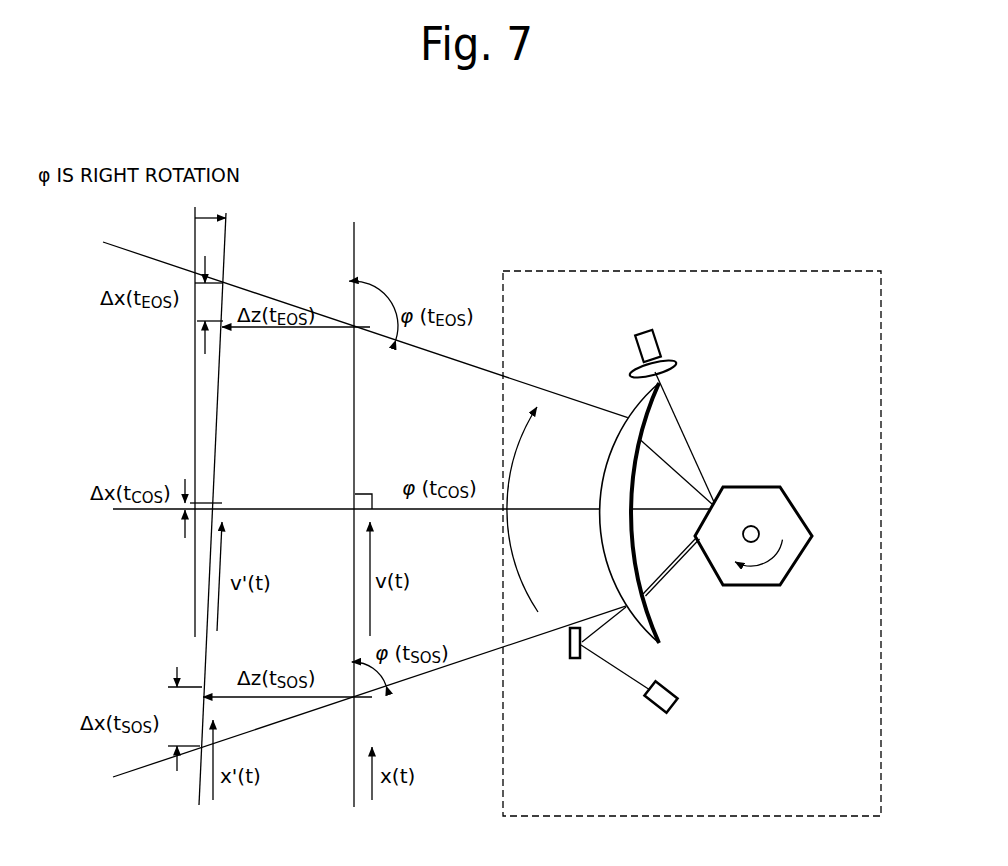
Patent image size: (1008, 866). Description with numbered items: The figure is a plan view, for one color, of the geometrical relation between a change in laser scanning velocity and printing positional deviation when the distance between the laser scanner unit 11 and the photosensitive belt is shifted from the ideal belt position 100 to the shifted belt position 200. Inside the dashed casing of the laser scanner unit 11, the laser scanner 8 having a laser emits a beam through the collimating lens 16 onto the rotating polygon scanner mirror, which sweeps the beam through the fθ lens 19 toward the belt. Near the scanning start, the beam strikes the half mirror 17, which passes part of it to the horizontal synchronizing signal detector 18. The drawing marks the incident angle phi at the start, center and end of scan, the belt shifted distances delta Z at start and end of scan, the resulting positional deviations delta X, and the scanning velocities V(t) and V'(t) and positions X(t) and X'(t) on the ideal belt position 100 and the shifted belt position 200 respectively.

The shifted belt position 200 is at (228, 228).
The ideal belt position 100 is at (356, 256).
The laser scanner 8 is at (657, 340).
The collimating lens 16 is at (675, 365).
The fθ lens 19 is at (664, 632).
The mirror 17 is at (572, 660).
The horizontal synchronizing signal detector 18 is at (652, 708).
The laser scanner unit 11 is at (558, 817).